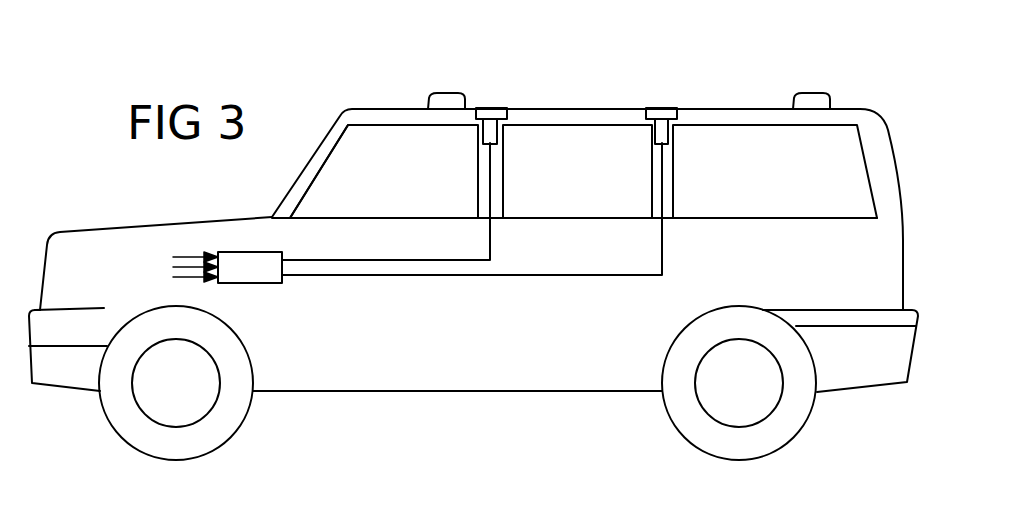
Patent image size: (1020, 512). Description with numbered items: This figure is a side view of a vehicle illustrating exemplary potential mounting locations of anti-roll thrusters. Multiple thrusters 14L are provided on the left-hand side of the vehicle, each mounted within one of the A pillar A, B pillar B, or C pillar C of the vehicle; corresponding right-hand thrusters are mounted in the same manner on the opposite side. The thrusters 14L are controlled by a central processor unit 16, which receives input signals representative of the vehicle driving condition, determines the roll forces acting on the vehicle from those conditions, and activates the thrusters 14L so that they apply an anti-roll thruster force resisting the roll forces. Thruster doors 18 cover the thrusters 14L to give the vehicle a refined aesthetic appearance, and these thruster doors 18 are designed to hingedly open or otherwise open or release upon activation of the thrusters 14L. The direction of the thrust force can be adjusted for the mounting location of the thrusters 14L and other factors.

The thrusters 14L is at (468, 120).
The central processor unit 16 is at (239, 252).
The thruster doors 18 is at (486, 92).
The A pillar A is at (320, 157).
The B pillar B is at (495, 180).
The C pillar C is at (667, 180).